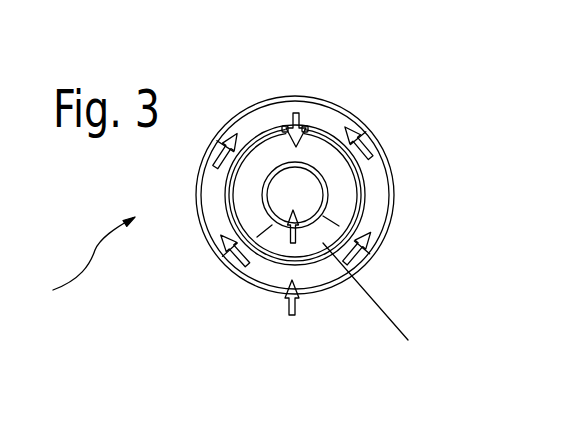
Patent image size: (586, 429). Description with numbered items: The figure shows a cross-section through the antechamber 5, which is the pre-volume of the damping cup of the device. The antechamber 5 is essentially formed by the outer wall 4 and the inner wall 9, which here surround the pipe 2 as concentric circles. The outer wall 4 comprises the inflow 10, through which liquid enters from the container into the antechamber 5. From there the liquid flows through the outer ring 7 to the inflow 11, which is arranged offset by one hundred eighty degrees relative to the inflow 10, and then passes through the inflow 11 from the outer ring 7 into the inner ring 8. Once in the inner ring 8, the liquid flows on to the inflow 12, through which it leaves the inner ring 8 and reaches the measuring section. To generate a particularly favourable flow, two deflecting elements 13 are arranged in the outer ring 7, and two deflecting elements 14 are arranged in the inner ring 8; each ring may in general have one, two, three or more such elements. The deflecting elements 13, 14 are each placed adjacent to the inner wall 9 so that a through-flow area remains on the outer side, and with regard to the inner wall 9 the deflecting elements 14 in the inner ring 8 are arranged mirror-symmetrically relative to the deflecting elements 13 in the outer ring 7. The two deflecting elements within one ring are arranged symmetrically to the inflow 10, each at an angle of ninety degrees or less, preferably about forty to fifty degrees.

The pipe 2 is at (327, 193).
The outer wall 4 is at (386, 224).
The antechamber 5 is at (84, 265).
The outer ring 7 is at (377, 198).
The inner ring 8 is at (371, 300).
The inner wall 9 is at (290, 236).
The inflow 10 is at (298, 315).
The inflow 11 is at (310, 130).
The inflow 12 is at (280, 256).
The deflecting elements 13 is at (232, 245).
The deflecting elements 14 is at (248, 220).